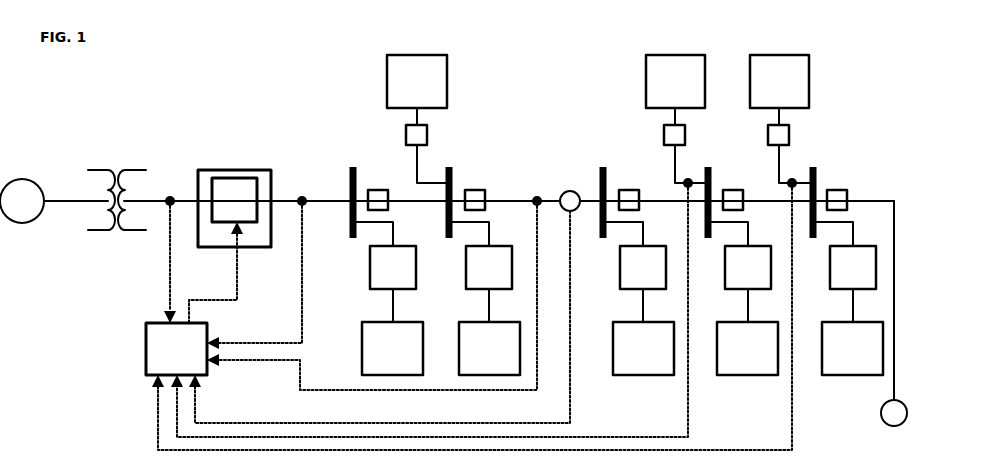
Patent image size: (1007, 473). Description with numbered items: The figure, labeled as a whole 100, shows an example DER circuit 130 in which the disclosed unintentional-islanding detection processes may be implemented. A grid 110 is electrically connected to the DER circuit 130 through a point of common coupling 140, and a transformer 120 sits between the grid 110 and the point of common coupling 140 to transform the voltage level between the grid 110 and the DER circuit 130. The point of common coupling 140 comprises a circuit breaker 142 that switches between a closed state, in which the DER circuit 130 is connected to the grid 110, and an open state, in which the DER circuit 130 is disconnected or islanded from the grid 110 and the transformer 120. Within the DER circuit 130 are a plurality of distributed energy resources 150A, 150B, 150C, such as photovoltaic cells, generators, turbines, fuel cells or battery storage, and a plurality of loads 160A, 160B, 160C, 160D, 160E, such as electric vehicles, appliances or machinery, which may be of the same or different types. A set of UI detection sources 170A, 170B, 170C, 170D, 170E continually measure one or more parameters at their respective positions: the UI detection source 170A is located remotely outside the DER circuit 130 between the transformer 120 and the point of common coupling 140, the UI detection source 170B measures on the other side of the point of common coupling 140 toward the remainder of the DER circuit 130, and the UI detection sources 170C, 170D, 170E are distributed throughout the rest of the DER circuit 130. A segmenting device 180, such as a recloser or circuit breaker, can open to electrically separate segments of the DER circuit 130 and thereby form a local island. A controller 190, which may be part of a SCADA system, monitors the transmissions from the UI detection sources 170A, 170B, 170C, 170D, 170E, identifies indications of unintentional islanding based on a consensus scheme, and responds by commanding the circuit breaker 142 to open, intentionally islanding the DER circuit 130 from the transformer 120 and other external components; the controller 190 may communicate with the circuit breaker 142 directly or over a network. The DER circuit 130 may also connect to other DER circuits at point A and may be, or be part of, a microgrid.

The power system 100 is at (475, 248).
The grid 110 is at (22, 201).
The transformer 120 is at (118, 156).
The DER circuit 130 is at (910, 47).
The point of common coupling 140 is at (249, 170).
The circuit breaker 142 is at (223, 250).
The distributed energy resource 150A is at (418, 119).
The distributed energy resource 150B is at (677, 119).
The distributed energy resource 150C is at (781, 119).
The load 160A is at (387, 271).
The load 160B is at (483, 271).
The load 160C is at (637, 271).
The load 160D is at (742, 271).
The load 160E is at (847, 271).
The UI detection source 170A is at (170, 195).
The UI detection source 170B is at (302, 195).
The UI detection source 170C is at (537, 195).
The UI detection source 170D is at (690, 178).
The UI detection source 170E is at (794, 178).
The segmenting device 180 is at (565, 190).
The controller 190 is at (176, 349).